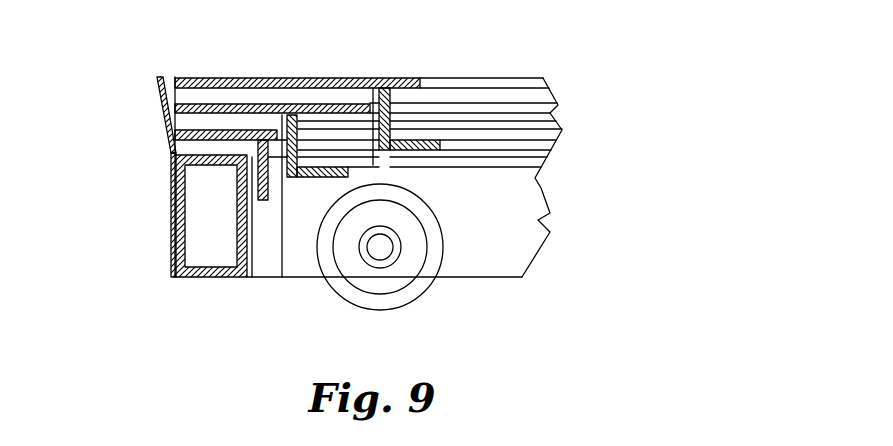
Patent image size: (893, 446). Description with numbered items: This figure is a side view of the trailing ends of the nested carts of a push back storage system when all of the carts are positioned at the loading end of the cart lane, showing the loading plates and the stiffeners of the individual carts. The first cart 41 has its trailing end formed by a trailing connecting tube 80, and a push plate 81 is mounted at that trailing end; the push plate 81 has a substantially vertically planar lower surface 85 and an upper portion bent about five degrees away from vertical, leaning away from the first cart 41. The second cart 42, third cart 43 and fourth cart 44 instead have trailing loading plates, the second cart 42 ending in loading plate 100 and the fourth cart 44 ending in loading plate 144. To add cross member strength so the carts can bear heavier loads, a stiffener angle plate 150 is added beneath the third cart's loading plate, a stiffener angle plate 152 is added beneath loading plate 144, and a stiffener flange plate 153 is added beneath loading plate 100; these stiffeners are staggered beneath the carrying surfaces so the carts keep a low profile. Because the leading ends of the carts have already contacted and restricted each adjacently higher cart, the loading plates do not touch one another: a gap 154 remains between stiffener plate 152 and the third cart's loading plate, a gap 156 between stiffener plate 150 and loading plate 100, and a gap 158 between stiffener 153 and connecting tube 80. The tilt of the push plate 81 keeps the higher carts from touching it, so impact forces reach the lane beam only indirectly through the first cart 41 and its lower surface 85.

The first cart 41 is at (172, 142).
The second cart 42 is at (200, 127).
The third cart 43 is at (218, 127).
The fourth cart 44 is at (266, 127).
The trailing connecting tube 80 is at (212, 166).
The push plate 81 is at (139, 179).
The lower surface 85 is at (173, 223).
The trailing loading plate 100 is at (270, 122).
The trailing loading plate 144 is at (374, 80).
The stiffener angle plate 150 is at (303, 178).
The stiffener angle plate 152 is at (428, 135).
The stiffener flange plate 153 is at (262, 200).
The gap 154 is at (373, 165).
The gap 156 is at (282, 277).
The gap 158 is at (252, 277).